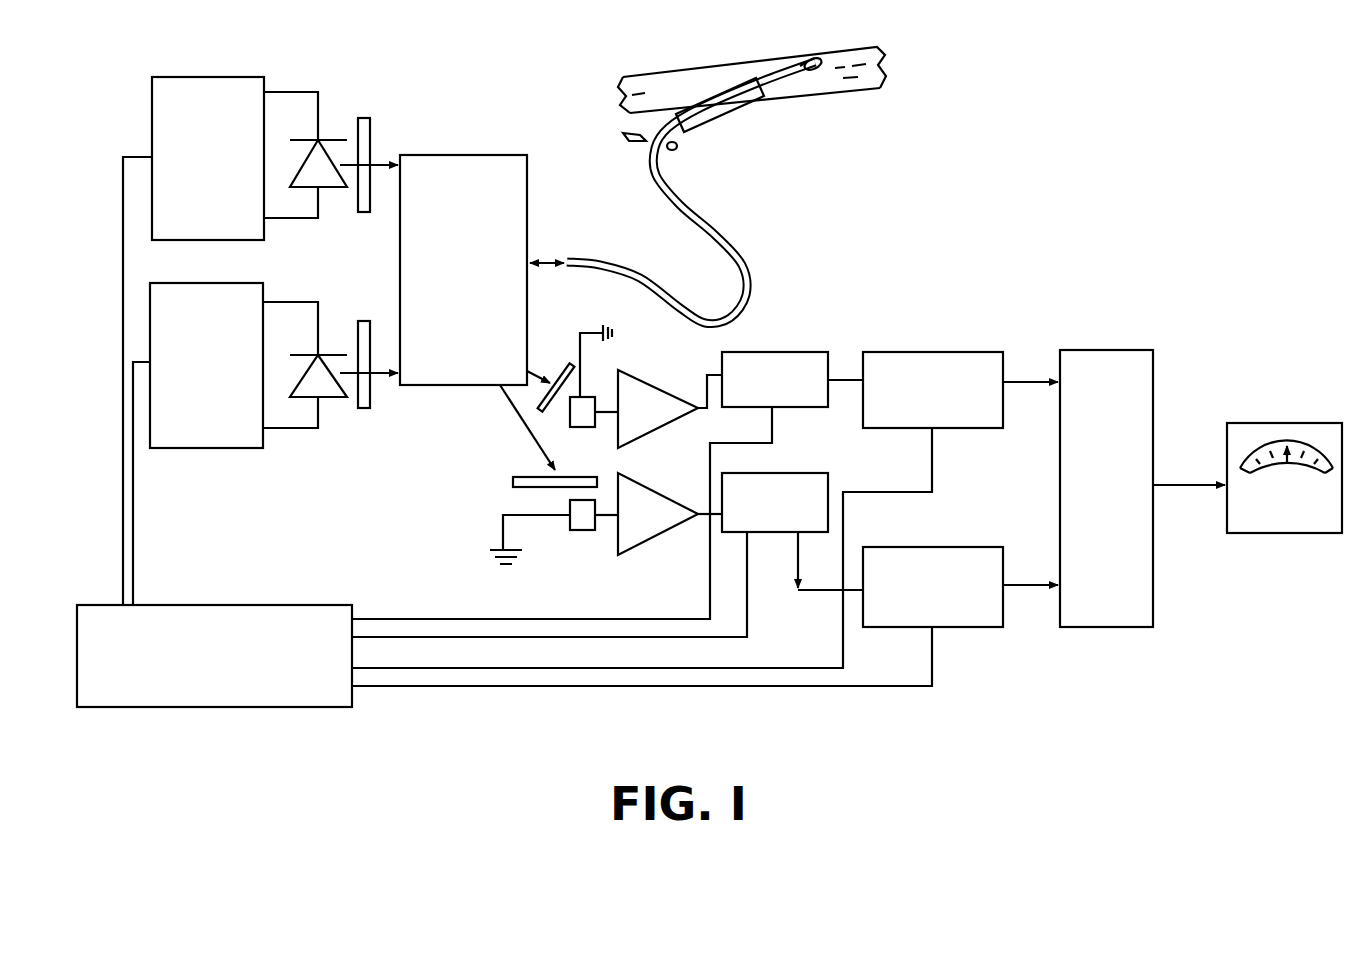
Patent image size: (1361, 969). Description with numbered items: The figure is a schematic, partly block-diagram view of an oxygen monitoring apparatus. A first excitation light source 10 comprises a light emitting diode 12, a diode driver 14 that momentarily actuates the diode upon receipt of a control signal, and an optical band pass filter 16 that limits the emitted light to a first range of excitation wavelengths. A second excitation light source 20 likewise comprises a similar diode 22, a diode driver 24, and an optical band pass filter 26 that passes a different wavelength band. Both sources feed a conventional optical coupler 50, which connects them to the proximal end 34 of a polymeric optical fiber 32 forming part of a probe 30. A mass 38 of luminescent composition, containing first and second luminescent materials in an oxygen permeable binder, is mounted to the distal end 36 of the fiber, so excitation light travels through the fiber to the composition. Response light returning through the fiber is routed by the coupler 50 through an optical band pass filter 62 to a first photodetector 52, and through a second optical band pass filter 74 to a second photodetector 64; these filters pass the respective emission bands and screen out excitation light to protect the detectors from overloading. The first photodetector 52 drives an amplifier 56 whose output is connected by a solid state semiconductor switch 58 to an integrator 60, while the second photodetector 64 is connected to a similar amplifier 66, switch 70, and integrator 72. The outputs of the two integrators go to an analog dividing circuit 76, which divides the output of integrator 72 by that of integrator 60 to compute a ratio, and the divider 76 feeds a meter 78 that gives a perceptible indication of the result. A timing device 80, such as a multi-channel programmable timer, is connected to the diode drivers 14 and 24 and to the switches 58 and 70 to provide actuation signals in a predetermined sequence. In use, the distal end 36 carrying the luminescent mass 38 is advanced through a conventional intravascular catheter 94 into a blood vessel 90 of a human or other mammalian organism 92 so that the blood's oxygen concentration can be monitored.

The first excitation light source 10 is at (327, 100).
The light emitting diode 12 is at (325, 190).
The diode driver 14 is at (225, 77).
The optical band pass filter 16 is at (366, 118).
The second excitation light source 20 is at (226, 459).
The diode 22 is at (333, 398).
The diode driver 24 is at (248, 283).
The optical band pass filter 26 is at (361, 321).
The probe 30 is at (684, 188).
The polymeric optical fiber 32 is at (672, 212).
The proximal end 34 is at (573, 268).
The distal end 36 is at (801, 76).
The mass of luminescent composition 38 is at (819, 72).
The optical coupler 50 is at (449, 152).
The first photodetector 52 is at (585, 397).
The amplifier 56 is at (632, 382).
The solid state semiconductor switch 58 is at (748, 352).
The integrator 60 is at (890, 352).
The optical band pass filter 62 is at (569, 368).
The second photodetector 64 is at (578, 531).
The amplifier 66 is at (633, 545).
The switch 70 is at (780, 473).
The integrator 72 is at (915, 547).
The second optical band pass filter 74 is at (513, 484).
The analog dividing circuit 76 is at (1060, 487).
The meter 78 is at (1268, 423).
The timing device 80 is at (275, 605).
The blood vessel 90 is at (622, 95).
The mammalian organism 92 is at (694, 56).
The intravascular catheter 94 is at (690, 131).